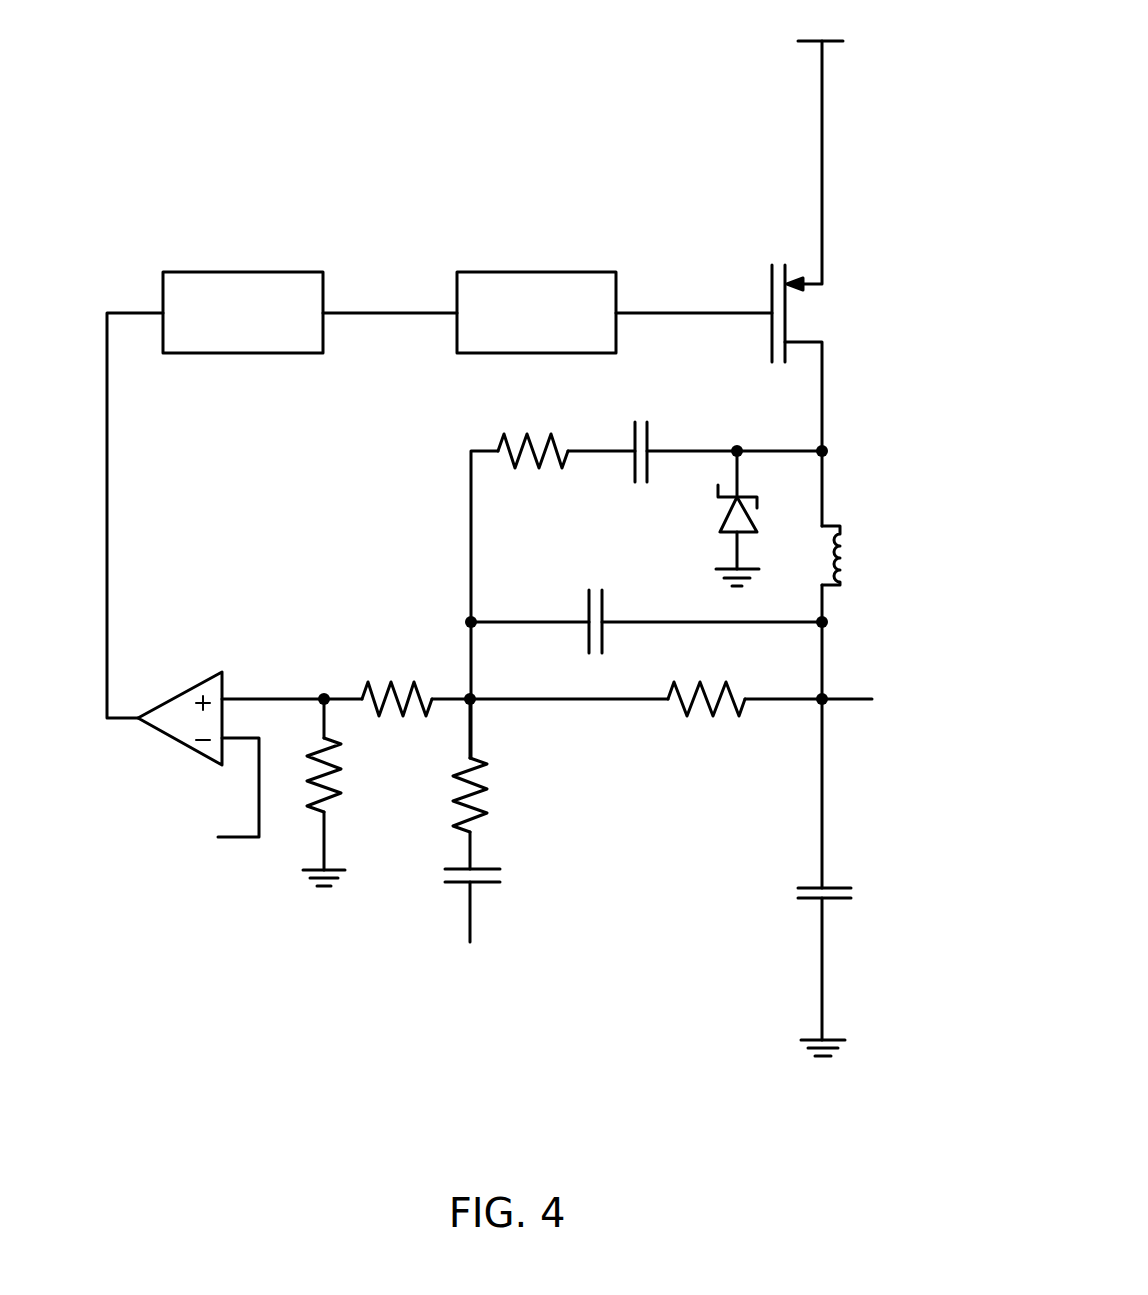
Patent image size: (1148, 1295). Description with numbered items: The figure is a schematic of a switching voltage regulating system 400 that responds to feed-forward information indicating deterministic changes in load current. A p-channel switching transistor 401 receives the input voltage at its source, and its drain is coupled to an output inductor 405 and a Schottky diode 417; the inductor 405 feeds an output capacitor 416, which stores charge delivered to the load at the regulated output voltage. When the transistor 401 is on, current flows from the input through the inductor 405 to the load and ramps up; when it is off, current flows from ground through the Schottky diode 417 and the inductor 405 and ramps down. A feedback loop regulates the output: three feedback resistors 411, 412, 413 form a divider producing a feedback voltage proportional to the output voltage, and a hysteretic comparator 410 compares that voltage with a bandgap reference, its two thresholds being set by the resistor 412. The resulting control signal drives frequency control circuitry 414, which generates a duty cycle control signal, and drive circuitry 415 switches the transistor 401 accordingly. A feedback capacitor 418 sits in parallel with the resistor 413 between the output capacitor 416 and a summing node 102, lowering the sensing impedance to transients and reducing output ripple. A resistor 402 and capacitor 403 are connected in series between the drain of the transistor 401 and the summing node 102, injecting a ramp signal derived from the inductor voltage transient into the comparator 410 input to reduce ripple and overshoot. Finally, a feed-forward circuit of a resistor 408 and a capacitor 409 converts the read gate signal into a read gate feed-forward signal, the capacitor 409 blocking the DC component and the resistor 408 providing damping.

The switching voltage regulating system 400 is at (485, 95).
The p-channel switching transistor 401 is at (772, 283).
The resistor 402 is at (510, 440).
The capacitor 403 is at (648, 442).
The output inductor 405 is at (838, 585).
The resistor 408 is at (490, 795).
The capacitor 409 is at (493, 884).
The hysteretic comparator 410 is at (160, 735).
The feedback resistor 411 is at (342, 790).
The feedback resistor 412 is at (418, 680).
The feedback resistor 413 is at (672, 710).
The frequency control circuitry 414 is at (235, 272).
The drive circuitry 415 is at (527, 272).
The output capacitor 416 is at (835, 888).
The Schottky diode 417 is at (718, 522).
The feedback capacitor 418 is at (587, 606).
The summing node 102 is at (476, 705).